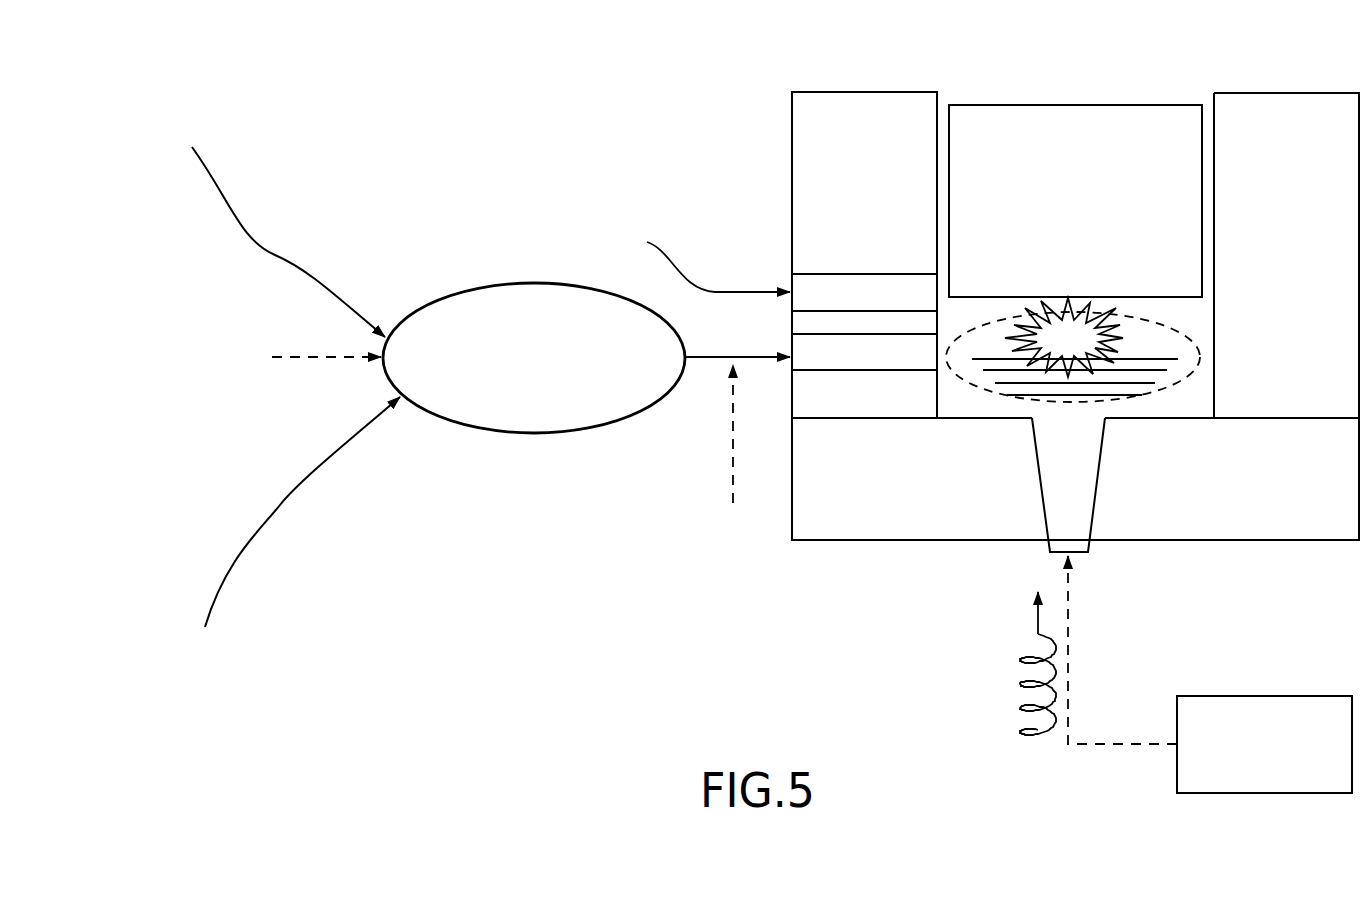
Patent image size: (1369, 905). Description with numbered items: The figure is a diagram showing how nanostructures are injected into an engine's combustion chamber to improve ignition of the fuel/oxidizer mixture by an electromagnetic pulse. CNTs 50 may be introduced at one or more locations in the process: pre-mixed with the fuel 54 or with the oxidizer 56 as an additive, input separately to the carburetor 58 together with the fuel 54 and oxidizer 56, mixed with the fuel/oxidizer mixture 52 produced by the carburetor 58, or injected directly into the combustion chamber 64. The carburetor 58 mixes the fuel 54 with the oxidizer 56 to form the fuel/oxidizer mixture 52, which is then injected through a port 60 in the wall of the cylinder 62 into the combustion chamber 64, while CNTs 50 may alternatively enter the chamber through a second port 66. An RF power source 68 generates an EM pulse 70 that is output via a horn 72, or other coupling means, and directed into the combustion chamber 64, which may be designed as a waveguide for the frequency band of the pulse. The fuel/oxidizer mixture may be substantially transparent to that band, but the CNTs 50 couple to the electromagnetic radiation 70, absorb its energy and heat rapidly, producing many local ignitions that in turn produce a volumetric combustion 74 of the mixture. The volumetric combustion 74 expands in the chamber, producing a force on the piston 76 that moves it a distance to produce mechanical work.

The CNTs 50 is at (482, 436).
The fuel/oxidizer mixture 52 is at (1182, 330).
The fuel 54 is at (276, 528).
The oxidizer 56 is at (257, 227).
The carburetor 58 is at (520, 284).
The port 60 is at (865, 352).
The cylinder 62 is at (792, 150).
The combustion chamber 64 is at (1206, 413).
The second port 66 is at (876, 270).
The RF power source 68 is at (1237, 696).
The EM pulse 70 is at (1038, 380).
The horn 72 is at (1055, 490).
The volumetric combustion 74 is at (1074, 348).
The piston 76 is at (1037, 105).